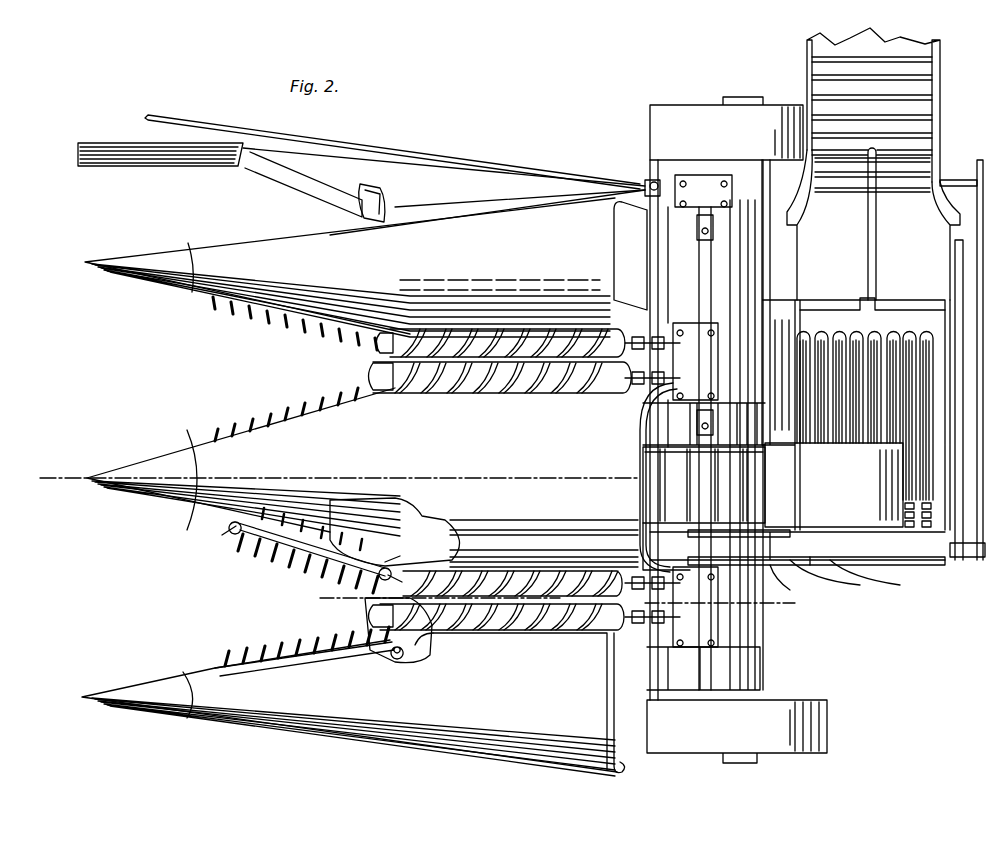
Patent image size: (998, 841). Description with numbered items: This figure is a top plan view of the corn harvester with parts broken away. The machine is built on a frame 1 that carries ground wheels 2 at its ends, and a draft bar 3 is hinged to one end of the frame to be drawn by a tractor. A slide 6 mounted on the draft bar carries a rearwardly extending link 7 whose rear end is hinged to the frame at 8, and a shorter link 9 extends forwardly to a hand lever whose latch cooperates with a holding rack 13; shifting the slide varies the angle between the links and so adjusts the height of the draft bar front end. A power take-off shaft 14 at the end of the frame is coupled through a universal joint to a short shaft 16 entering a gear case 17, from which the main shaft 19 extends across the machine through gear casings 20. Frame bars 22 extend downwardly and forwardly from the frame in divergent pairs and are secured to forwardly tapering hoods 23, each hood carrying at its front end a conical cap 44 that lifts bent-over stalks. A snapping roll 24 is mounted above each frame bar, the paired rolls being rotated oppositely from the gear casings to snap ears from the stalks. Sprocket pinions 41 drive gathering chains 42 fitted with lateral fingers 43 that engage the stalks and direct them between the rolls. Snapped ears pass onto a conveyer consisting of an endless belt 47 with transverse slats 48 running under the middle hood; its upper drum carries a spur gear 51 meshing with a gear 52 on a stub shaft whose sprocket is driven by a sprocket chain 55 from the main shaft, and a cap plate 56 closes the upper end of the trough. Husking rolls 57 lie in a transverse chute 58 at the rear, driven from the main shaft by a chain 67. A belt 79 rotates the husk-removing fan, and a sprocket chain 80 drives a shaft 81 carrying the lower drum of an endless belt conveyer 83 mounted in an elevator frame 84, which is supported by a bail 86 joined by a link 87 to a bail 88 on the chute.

The frame 1 is at (752, 632).
The ground wheels 2 is at (681, 104).
The draft bar 3 is at (312, 193).
The slide 6 is at (404, 205).
The link 7 is at (442, 196).
The hinged connection 8 is at (650, 180).
The shorter link 9 is at (358, 188).
The holding rack 13 is at (270, 128).
The power take-off shaft 14 is at (520, 160).
The short shaft 16 is at (678, 175).
The gear case 17 is at (712, 175).
The main shaft 19 is at (699, 541).
The gear casings 20 is at (695, 485).
The frame bars 22 is at (380, 342).
The hoods 23 is at (538, 519).
The snapping roll 24 is at (532, 338).
The sprocket pinions 41 is at (398, 665).
The chains 42 is at (272, 520).
The lateral fingers 43 is at (300, 402).
The conical cap 44 is at (155, 252).
The endless belt 47 is at (735, 483).
The transverse slats 48 is at (752, 510).
The spur gear 51 is at (848, 565).
The gear 52 is at (830, 565).
The sprocket chain 55 is at (790, 565).
The cap plate 56 is at (834, 485).
The husking rolls 57 is at (840, 338).
The chute 58 is at (796, 320).
The chain 67 is at (778, 580).
The belt 79 is at (956, 277).
The sprocket chain 80 is at (978, 172).
The shaft 81 is at (948, 178).
The endless belt conveyer 83 is at (830, 86).
The frame 84 is at (807, 42).
The bail 86 is at (906, 156).
The link 87 is at (877, 232).
The bail 88 is at (822, 300).